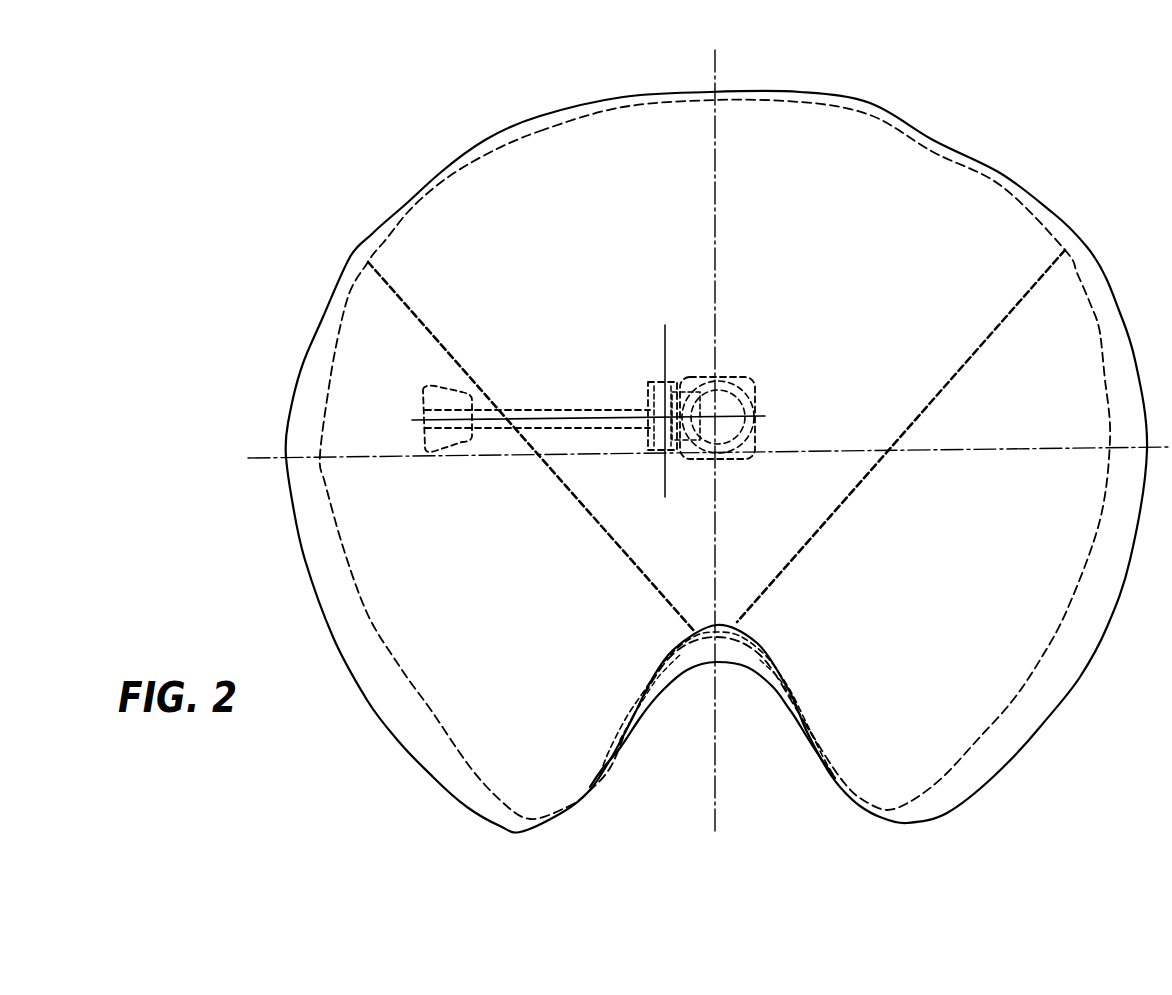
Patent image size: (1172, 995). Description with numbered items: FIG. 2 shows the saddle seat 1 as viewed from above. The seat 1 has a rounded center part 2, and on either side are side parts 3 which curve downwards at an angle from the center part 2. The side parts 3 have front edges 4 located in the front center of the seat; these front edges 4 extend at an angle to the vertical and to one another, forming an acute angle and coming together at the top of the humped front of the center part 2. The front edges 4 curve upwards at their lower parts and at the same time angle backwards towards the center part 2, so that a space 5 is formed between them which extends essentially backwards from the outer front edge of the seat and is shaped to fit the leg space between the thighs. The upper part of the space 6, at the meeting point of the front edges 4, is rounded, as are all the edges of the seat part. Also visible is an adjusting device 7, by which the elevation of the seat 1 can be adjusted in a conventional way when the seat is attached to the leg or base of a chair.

The saddle seat 1 is at (388, 185).
The center part 2 is at (833, 138).
The side parts 3 is at (460, 714).
The front edges 4 is at (703, 63).
The space 5 is at (703, 772).
The upper part of the space 6 is at (730, 625).
The adjusting device 7 is at (590, 408).